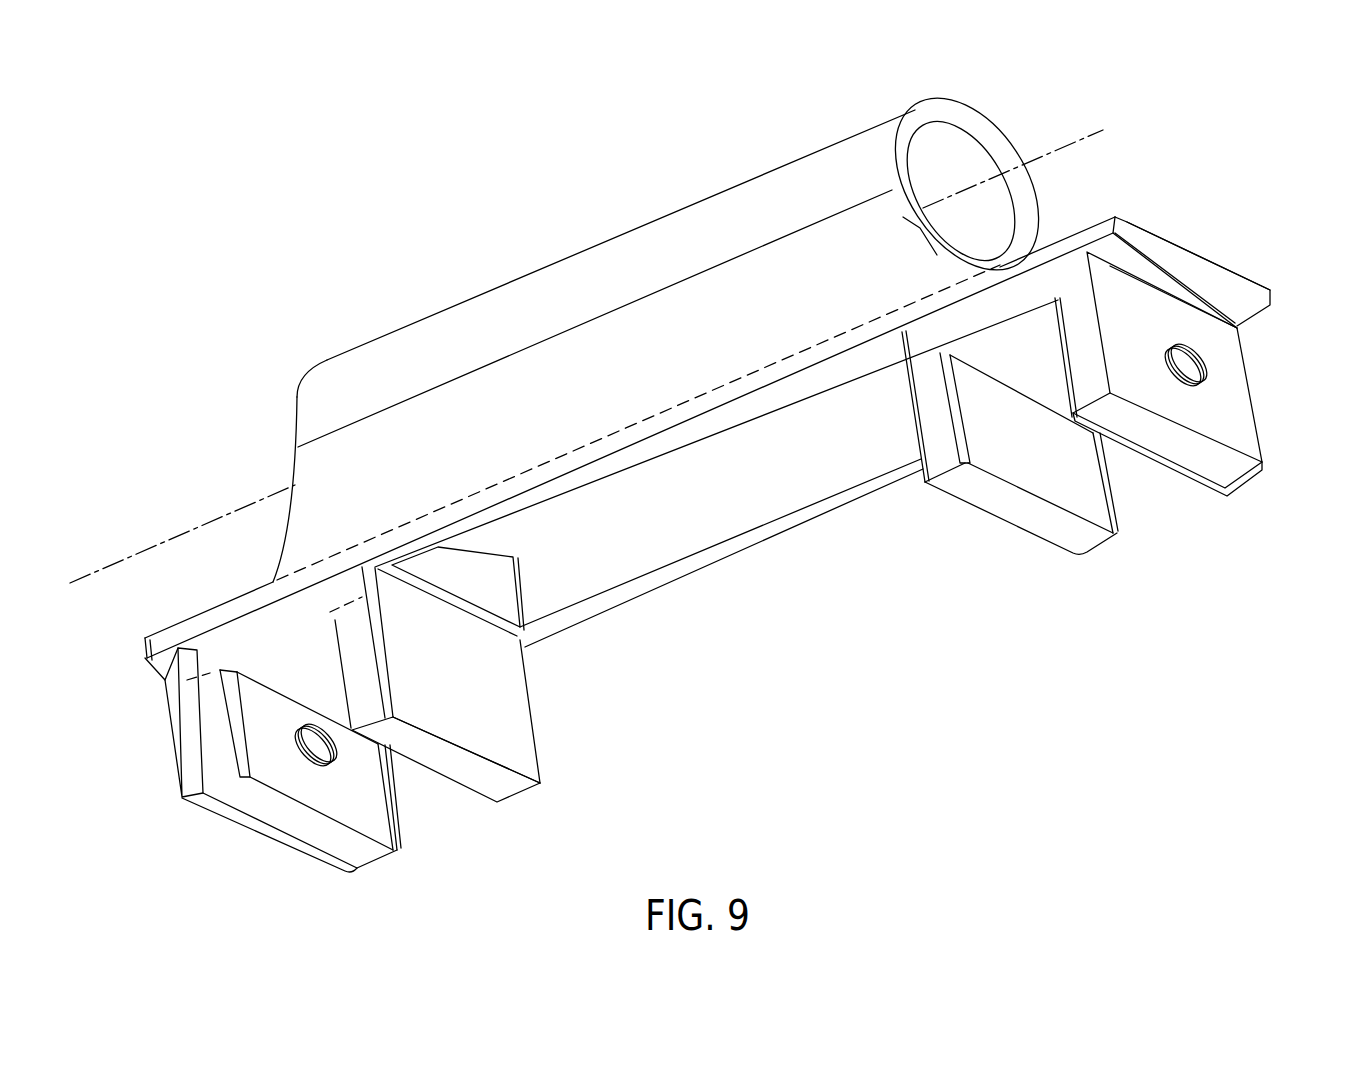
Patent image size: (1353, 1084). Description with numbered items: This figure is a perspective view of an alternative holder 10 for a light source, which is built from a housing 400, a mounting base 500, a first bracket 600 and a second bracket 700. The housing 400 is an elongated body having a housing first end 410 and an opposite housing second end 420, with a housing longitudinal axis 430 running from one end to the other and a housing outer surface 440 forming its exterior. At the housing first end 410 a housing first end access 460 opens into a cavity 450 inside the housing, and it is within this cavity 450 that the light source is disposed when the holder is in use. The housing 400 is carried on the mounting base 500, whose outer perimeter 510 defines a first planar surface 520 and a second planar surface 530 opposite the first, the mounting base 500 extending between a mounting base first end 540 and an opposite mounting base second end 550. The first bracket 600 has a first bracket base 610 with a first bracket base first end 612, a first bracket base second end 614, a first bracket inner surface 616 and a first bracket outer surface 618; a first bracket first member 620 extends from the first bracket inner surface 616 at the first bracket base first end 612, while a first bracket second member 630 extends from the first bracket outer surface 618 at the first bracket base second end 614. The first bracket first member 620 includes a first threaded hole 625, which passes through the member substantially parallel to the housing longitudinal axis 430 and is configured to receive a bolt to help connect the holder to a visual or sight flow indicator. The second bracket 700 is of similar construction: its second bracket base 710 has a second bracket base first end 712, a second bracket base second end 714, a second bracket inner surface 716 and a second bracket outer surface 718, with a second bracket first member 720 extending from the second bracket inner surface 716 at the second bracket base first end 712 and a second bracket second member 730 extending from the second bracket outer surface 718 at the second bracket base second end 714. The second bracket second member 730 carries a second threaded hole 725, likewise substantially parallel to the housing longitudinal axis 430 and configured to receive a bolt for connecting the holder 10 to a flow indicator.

The holder 10 is at (457, 147).
The housing 400 is at (772, 197).
The housing first end 410 is at (960, 117).
The housing second end 420 is at (295, 405).
The housing longitudinal axis 430 is at (1067, 147).
The housing outer surface 440 is at (478, 310).
The cavity 450 is at (958, 227).
The housing first end access 460 is at (947, 137).
The mounting base 500 is at (1196, 249).
The outer perimeter 510 is at (733, 390).
The first planar surface 520 is at (237, 597).
The second planar surface 530 is at (473, 523).
The mounting base first end 540 is at (1250, 283).
The mounting base second end 550 is at (143, 664).
The first bracket 600 is at (1212, 349).
The first bracket base 610 is at (997, 313).
The first bracket base first end 612 is at (1090, 272).
The first bracket base second end 614 is at (897, 348).
The first bracket inner surface 616 is at (1012, 373).
The first bracket outer surface 618 is at (920, 322).
The first bracket first member 620 is at (1262, 470).
The first threaded hole 625 is at (1240, 422).
The first bracket second member 630 is at (1100, 503).
The second bracket 700 is at (496, 694).
The second bracket base 710 is at (185, 678).
The second bracket base first end 712 is at (370, 590).
The second bracket base second end 714 is at (232, 672).
The second bracket inner surface 716 is at (302, 688).
The second bracket outer surface 718 is at (192, 637).
The second bracket first member 720 is at (530, 765).
The second threaded hole 725 is at (313, 767).
The second bracket second member 730 is at (380, 827).